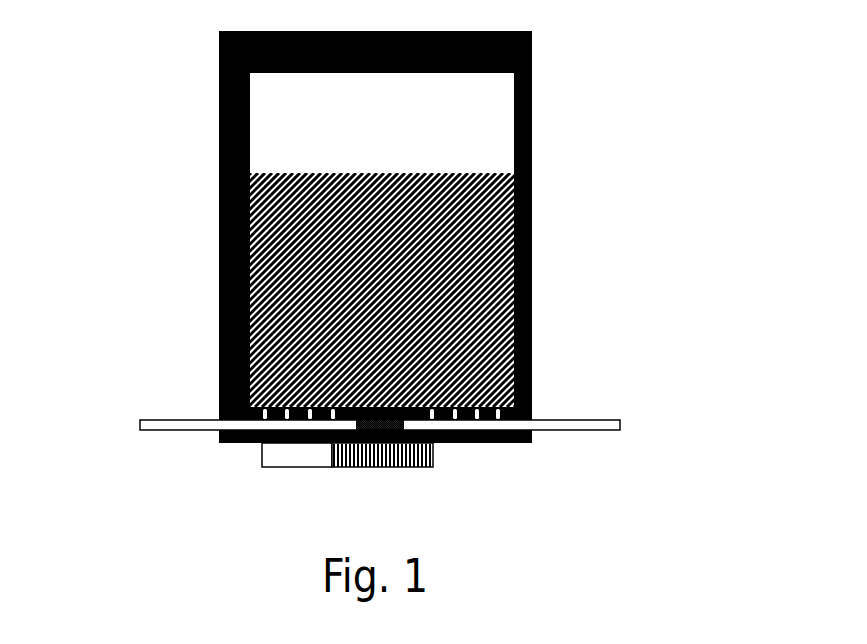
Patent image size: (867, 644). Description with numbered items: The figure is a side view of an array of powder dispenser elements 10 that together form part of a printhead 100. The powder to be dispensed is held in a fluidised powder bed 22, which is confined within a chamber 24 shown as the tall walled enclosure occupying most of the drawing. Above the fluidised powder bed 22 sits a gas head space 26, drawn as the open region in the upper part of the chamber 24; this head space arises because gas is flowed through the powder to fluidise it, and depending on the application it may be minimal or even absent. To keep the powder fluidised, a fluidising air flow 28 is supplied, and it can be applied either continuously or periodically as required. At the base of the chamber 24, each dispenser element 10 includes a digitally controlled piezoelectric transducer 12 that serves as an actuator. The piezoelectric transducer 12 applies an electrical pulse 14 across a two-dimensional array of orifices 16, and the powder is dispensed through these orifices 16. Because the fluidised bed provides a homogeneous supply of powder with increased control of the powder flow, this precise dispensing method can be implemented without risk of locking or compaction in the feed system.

The printhead 100 is at (382, 300).
The powder dispenser element 10 is at (284, 501).
The piezoelectric transducer 12 is at (290, 468).
The electrical pulse 14 is at (243, 452).
The array of orifices 16 is at (437, 457).
The fluidised powder bed 22 is at (532, 242).
The chamber 24 is at (533, 170).
The gas head space 26 is at (442, 130).
The fluidising air flow 28 is at (628, 426).